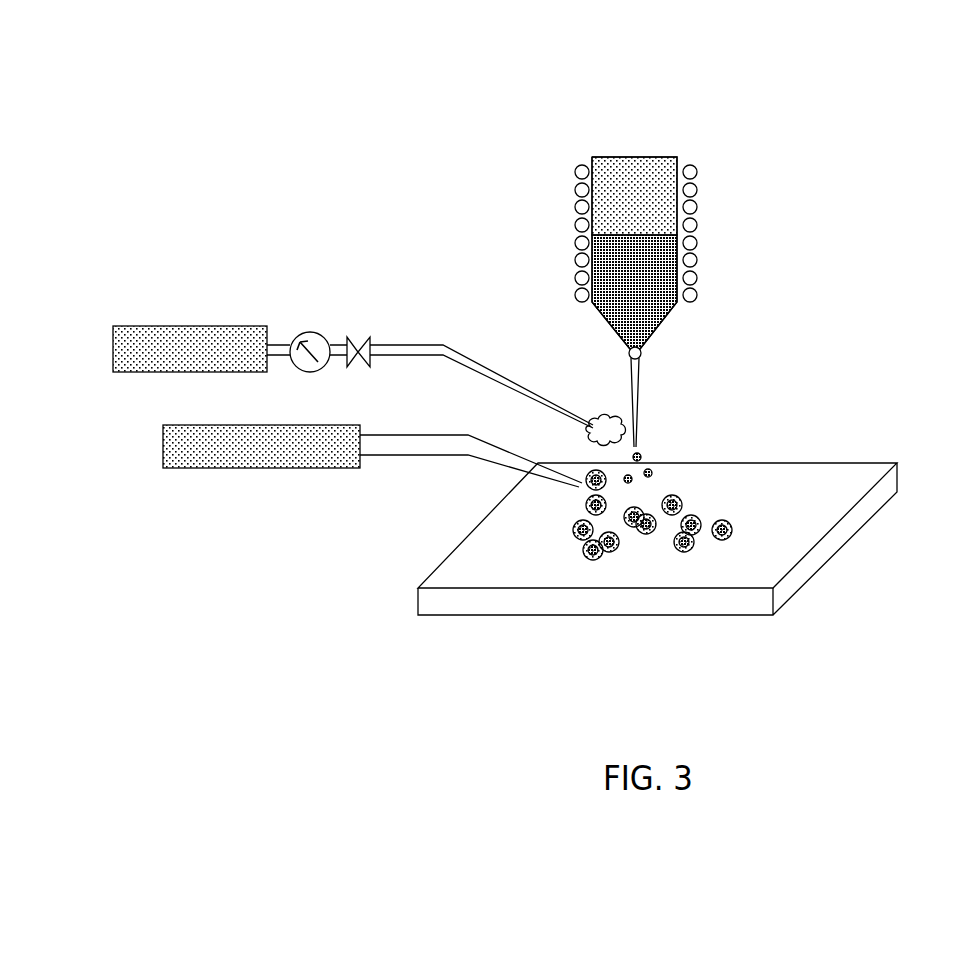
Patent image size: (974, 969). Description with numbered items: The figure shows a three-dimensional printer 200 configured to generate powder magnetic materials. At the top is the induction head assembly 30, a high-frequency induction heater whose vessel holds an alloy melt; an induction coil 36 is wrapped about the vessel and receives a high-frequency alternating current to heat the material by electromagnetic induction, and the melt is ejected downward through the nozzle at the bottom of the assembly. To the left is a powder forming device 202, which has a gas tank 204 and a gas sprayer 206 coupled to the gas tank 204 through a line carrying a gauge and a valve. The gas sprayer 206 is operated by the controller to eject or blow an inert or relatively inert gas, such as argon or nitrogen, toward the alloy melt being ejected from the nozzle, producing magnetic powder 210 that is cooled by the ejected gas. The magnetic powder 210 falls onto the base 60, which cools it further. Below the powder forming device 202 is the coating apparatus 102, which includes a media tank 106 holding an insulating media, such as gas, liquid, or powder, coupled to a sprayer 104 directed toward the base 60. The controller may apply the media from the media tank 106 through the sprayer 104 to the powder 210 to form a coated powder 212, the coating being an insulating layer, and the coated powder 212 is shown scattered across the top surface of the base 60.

The 3D printer 200 is at (760, 96).
The induction head assembly 30 is at (601, 140).
The induction coil 36 is at (574, 220).
The powder forming device 202 is at (283, 295).
The gas tank 204 is at (198, 326).
The gas sprayer 206 is at (398, 345).
The magnetic powder 210 is at (642, 453).
The coated powder 212 is at (680, 497).
The coating apparatus 102 is at (300, 540).
The media tank 106 is at (213, 470).
The sprayer 104 is at (432, 456).
The base 60 is at (852, 537).